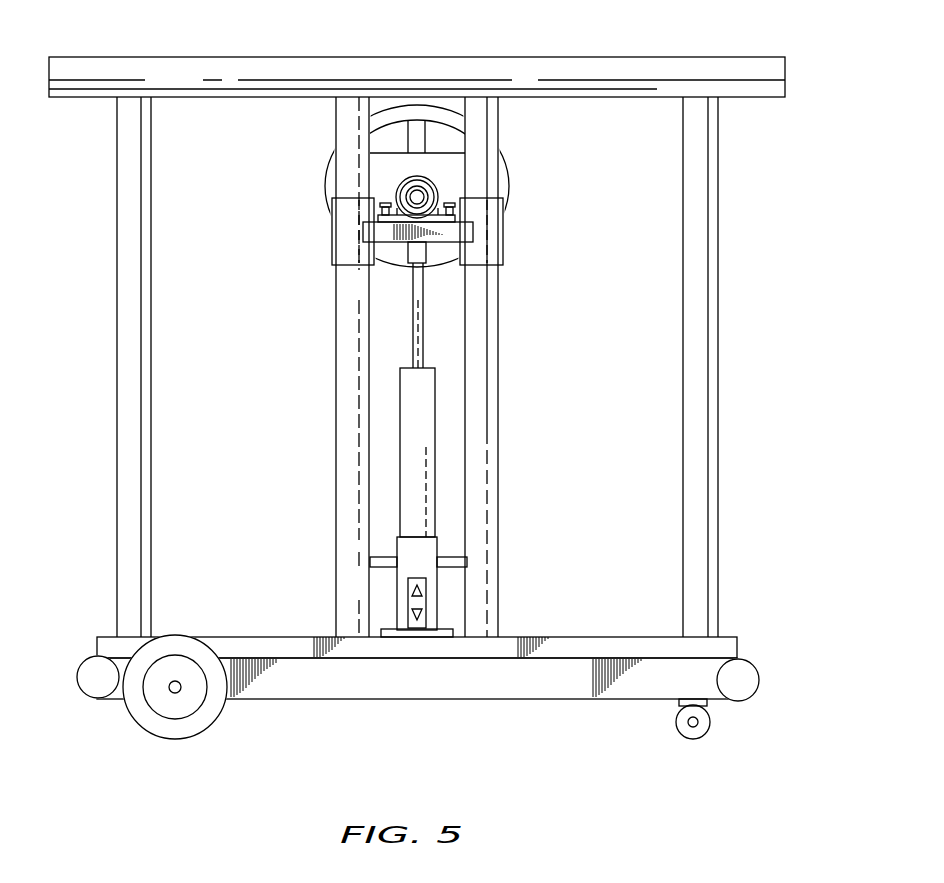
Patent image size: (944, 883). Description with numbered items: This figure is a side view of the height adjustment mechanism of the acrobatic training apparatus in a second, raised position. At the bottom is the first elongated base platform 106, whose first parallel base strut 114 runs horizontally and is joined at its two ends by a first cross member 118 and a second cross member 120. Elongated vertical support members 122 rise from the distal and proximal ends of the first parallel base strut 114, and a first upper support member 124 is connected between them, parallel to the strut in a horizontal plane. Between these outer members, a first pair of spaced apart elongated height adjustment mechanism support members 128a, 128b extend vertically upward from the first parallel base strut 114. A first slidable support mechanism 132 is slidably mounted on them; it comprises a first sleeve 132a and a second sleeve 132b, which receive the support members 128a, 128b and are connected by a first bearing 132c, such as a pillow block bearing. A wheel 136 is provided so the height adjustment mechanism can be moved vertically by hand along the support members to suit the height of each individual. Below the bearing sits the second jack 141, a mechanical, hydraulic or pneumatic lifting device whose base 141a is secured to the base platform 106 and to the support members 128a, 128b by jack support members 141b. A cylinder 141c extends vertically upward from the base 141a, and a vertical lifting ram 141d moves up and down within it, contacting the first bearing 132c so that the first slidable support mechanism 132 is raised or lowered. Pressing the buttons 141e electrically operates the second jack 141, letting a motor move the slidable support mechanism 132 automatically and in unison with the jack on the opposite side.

The first elongated base platform 106 is at (595, 638).
The first parallel base strut 114 is at (472, 685).
The first cross member 118 is at (737, 682).
The second cross member 120 is at (97, 686).
The elongated vertical support member 122 is at (127, 408).
The first upper support member 124 is at (605, 57).
The first elongated height adjustment mechanism support member 128a is at (493, 423).
The second elongated height adjustment mechanism support member 128b is at (345, 454).
The first slidable support mechanism 132 is at (490, 223).
The first sleeve 132a is at (500, 255).
The second sleeve 132b is at (333, 257).
The first bearing 132c is at (408, 187).
The wheel 136 is at (333, 192).
The second jack 141 is at (383, 590).
The base 141a is at (403, 623).
The jack support members 141b is at (383, 558).
The cylinder 141c is at (418, 546).
The vertical lifting ram 141d is at (417, 330).
The buttons 141e is at (430, 592).